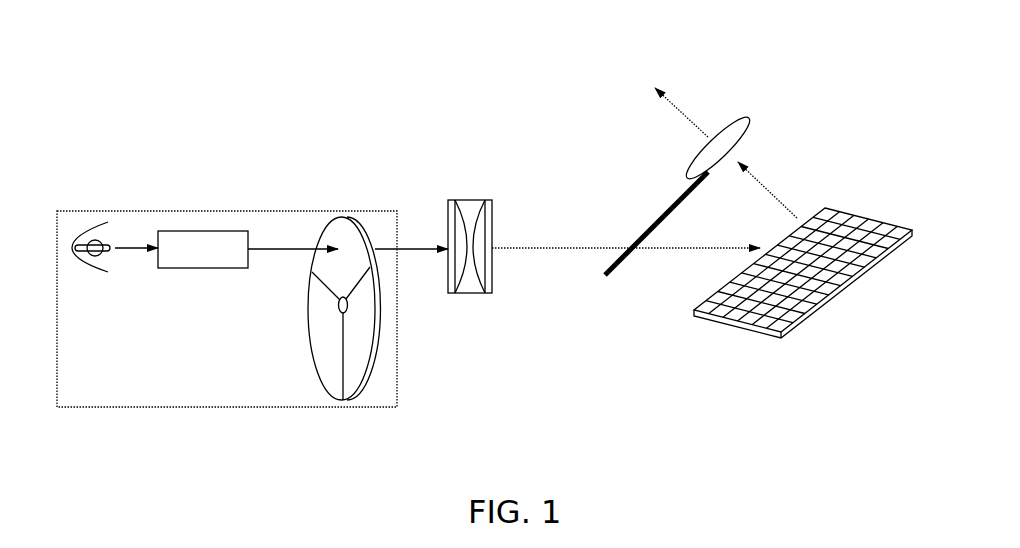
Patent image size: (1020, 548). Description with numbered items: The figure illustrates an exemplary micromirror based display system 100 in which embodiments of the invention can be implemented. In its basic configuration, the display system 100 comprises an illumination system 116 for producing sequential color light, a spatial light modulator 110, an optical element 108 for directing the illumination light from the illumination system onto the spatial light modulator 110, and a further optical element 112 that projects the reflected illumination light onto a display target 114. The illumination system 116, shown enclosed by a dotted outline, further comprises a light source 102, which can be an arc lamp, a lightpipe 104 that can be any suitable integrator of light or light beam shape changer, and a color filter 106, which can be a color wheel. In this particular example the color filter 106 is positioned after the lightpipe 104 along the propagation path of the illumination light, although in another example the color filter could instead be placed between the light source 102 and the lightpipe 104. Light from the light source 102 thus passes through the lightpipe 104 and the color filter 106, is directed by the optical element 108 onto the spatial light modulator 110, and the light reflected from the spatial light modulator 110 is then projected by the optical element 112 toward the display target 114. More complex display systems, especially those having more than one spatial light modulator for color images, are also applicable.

The display system 100 is at (352, 122).
The light source 102 is at (87, 218).
The lightpipe 104 is at (203, 230).
The color filter 106 is at (350, 218).
The optical element 108 is at (470, 200).
The spatial light modulator 110 is at (840, 203).
The optical element 112 is at (743, 115).
The display target 114 is at (678, 40).
The illumination system 116 is at (227, 408).